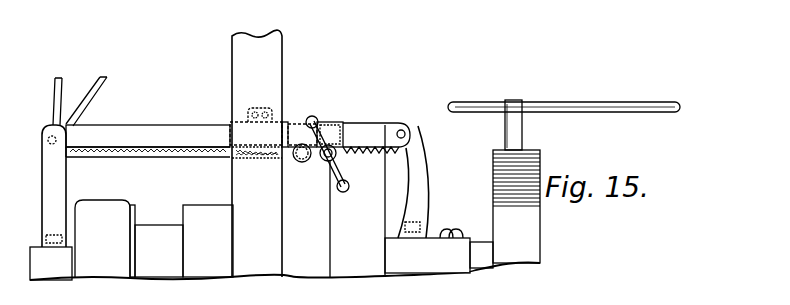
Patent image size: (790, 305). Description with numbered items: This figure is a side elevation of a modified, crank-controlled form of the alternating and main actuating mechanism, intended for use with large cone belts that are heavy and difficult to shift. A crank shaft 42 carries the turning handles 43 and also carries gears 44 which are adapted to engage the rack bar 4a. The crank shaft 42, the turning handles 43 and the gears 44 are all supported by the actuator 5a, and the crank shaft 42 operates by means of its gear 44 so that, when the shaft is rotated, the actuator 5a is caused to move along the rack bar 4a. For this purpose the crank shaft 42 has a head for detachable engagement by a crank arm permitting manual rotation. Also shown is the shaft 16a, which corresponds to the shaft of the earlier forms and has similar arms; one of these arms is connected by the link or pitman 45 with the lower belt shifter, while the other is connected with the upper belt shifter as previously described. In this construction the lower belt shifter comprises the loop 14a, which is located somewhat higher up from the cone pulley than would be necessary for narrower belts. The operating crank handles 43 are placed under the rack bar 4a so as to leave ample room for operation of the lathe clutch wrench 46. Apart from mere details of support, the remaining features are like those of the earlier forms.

The rack bar 4a is at (148, 141).
The loop 14a is at (231, 124).
The shaft 16a is at (290, 122).
The turning handles 43 is at (314, 116).
The actuator 5a is at (341, 122).
The crank shaft 42 is at (357, 127).
The link or pitman 45 is at (296, 161).
The gears 44 is at (323, 161).
The lathe clutch wrench 46 is at (611, 104).